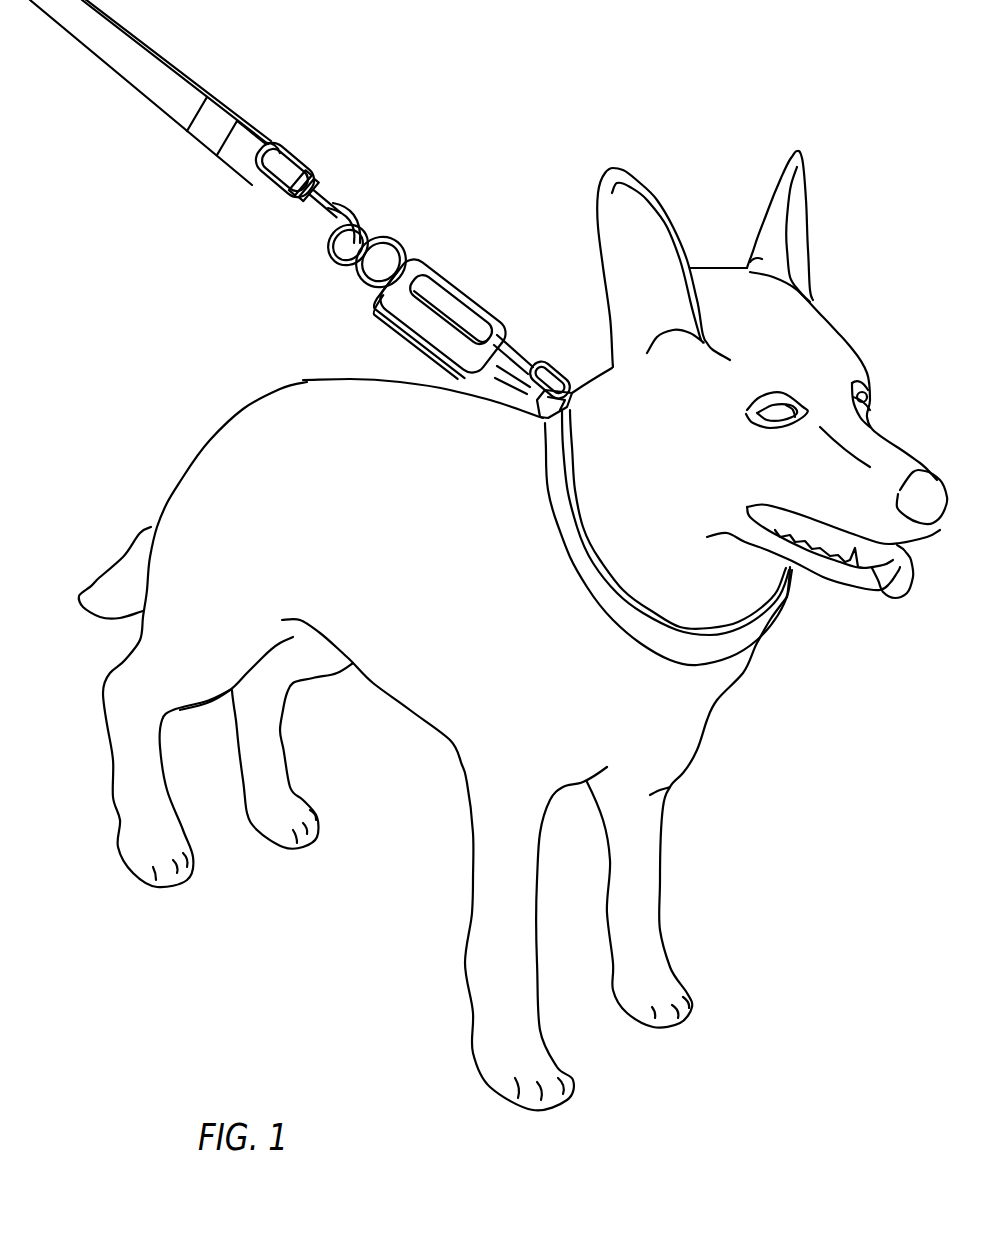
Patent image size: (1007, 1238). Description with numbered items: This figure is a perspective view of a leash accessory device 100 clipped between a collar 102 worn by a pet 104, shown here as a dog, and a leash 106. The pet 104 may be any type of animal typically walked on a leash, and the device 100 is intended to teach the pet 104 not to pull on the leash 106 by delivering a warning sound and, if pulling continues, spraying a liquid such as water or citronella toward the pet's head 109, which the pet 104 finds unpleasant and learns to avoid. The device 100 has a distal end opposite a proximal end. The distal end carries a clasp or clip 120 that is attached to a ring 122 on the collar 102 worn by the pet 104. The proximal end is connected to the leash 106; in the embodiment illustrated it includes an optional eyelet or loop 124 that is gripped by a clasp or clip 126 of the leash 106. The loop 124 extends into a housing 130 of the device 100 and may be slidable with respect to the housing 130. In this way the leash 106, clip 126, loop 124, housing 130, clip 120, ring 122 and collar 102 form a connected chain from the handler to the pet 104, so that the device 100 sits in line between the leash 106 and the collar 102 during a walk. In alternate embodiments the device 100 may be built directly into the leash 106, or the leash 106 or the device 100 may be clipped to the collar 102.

The leash accessory device 100 is at (472, 280).
The collar 102 is at (763, 623).
The pet 104 is at (310, 378).
The leash 106 is at (163, 77).
The pet's head 109 is at (827, 337).
The clip 120 is at (517, 347).
The ring 122 is at (553, 383).
The loop 124 is at (390, 240).
The clip 126 is at (360, 227).
The housing 130 is at (460, 313).